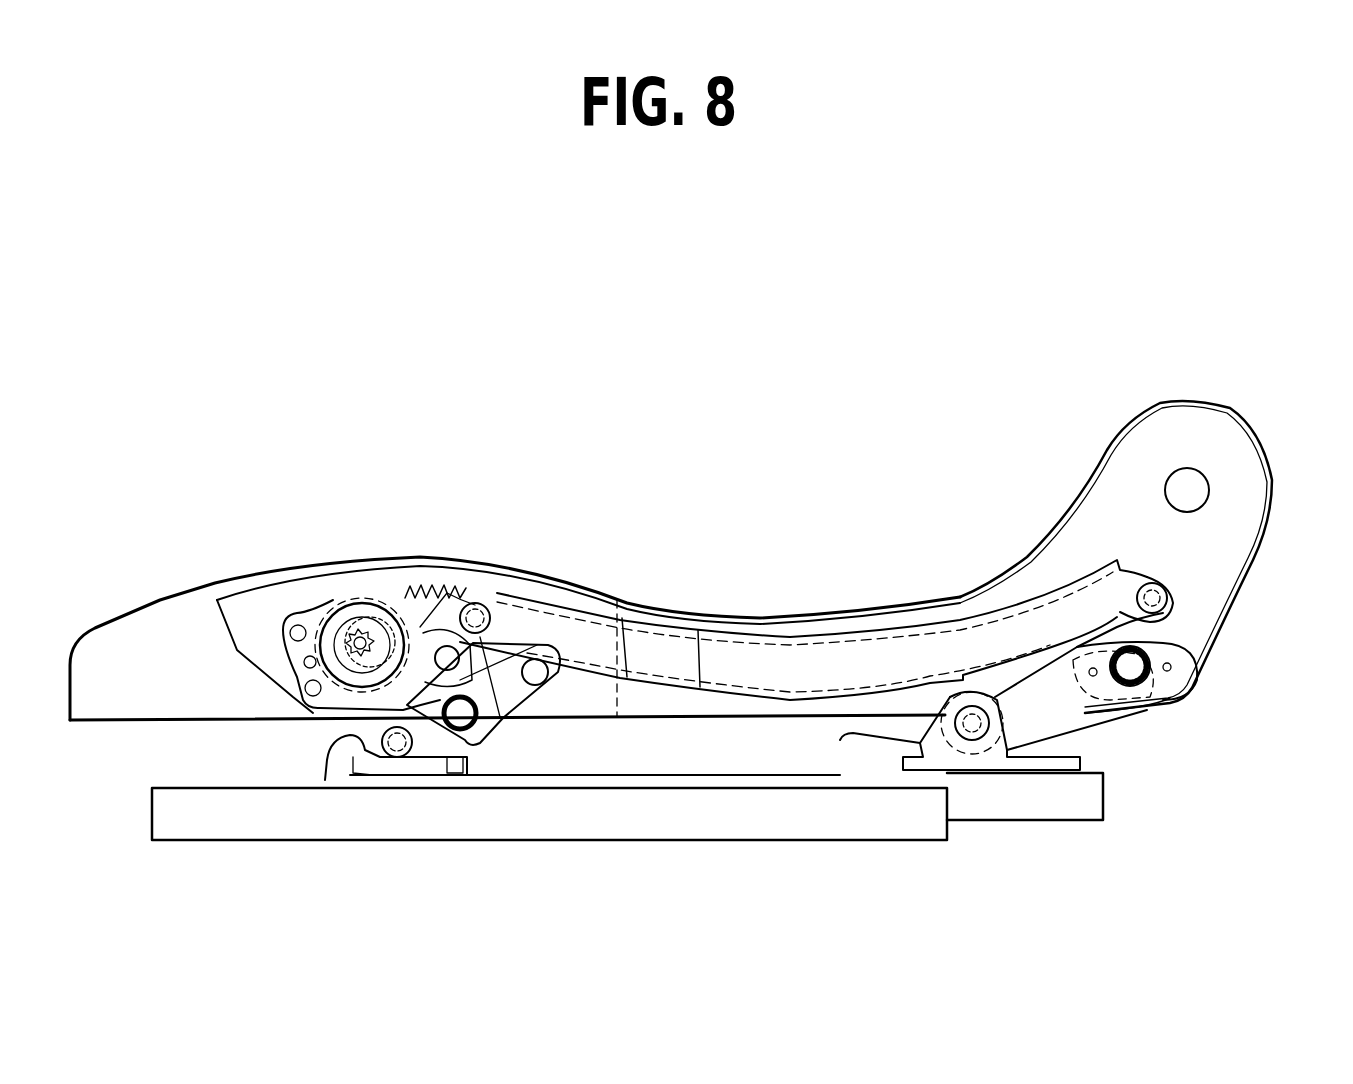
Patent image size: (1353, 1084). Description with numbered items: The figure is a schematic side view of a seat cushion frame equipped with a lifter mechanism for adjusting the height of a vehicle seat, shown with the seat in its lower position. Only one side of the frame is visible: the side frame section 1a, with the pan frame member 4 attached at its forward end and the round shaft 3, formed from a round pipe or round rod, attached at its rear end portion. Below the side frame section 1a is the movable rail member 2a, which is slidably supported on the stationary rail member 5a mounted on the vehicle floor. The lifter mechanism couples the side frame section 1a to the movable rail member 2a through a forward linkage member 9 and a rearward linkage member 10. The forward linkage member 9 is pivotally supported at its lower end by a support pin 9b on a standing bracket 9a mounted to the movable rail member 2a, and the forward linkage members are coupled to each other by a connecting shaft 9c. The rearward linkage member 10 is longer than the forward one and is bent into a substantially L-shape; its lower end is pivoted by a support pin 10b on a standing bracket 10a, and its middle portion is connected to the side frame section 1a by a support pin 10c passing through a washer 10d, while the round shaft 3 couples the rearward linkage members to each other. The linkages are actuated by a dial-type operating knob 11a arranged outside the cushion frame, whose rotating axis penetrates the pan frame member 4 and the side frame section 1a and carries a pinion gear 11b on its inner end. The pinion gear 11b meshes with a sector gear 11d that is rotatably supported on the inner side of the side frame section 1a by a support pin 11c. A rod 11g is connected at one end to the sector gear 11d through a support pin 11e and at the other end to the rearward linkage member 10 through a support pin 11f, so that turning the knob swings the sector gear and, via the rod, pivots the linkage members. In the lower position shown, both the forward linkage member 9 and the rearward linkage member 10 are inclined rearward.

The pan frame member 4 is at (160, 600).
The side frame section 1a is at (900, 607).
The rod 11g is at (792, 637).
The dial-type operating knob 11a is at (355, 605).
The pinion gear 11b is at (295, 615).
The support pin 11c is at (447, 646).
The sector gear 11d is at (450, 585).
The support pin 11e is at (478, 603).
The support pin 11f is at (1160, 598).
The forward linkage member 9 is at (485, 748).
The standing bracket 9a is at (325, 780).
The support pin 9b is at (397, 757).
The connecting shaft 9c is at (460, 728).
The stationary rail member 5a is at (697, 827).
The movable rail member 2a is at (1040, 815).
The rearward linkage member 10 is at (1078, 724).
The standing bracket 10a is at (840, 740).
The support pin 10b is at (972, 728).
The support pin 10c is at (1130, 672).
The washer 10d is at (1150, 660).
The round shaft 3 is at (1160, 687).